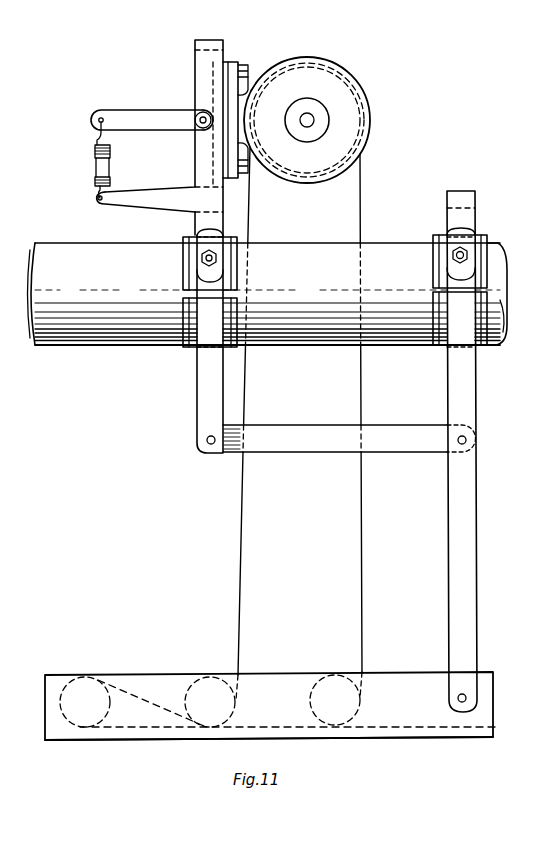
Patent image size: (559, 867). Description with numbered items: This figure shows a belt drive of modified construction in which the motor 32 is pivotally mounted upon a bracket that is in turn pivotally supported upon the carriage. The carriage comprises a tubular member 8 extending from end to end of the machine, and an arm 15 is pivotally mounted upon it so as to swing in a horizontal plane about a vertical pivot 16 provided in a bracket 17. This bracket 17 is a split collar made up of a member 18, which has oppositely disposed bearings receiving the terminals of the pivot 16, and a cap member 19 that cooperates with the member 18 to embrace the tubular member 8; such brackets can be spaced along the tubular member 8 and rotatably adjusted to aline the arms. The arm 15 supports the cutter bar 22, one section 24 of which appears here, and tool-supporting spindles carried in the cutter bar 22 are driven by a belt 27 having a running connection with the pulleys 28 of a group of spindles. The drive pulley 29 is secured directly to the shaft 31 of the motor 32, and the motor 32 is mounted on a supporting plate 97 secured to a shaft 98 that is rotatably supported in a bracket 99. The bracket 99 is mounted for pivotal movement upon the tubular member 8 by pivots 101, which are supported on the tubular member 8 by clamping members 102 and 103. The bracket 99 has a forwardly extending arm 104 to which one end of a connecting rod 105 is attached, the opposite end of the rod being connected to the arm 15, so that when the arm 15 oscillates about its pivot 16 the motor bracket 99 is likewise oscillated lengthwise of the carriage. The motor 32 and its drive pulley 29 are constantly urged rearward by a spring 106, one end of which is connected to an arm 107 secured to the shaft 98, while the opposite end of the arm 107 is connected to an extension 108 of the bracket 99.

The tubular member 8 is at (42, 247).
The arm 15 is at (478, 528).
The vertical pivot 16 is at (463, 253).
The bracket 17 is at (497, 236).
The member 18 is at (437, 240).
The cap member 19 is at (440, 350).
The cutter bar 22 is at (408, 743).
The cutter bar section 24 is at (400, 682).
The belt 27 is at (362, 585).
The pulley 28 is at (88, 680).
The drive pulley 29 is at (370, 100).
The shaft 31 is at (307, 120).
The motor 32 is at (338, 85).
The supporting plate 97 is at (213, 74).
The shaft 98 is at (201, 117).
The bracket 99 is at (197, 160).
The pivot 101 is at (200, 256).
The clamping member 102 is at (229, 258).
The clamping member 103 is at (240, 337).
The forwardly extending arm 104 is at (205, 412).
The connecting rod 105 is at (282, 448).
The spring 106 is at (95, 183).
The arm 107 is at (113, 112).
The extension 108 is at (142, 206).